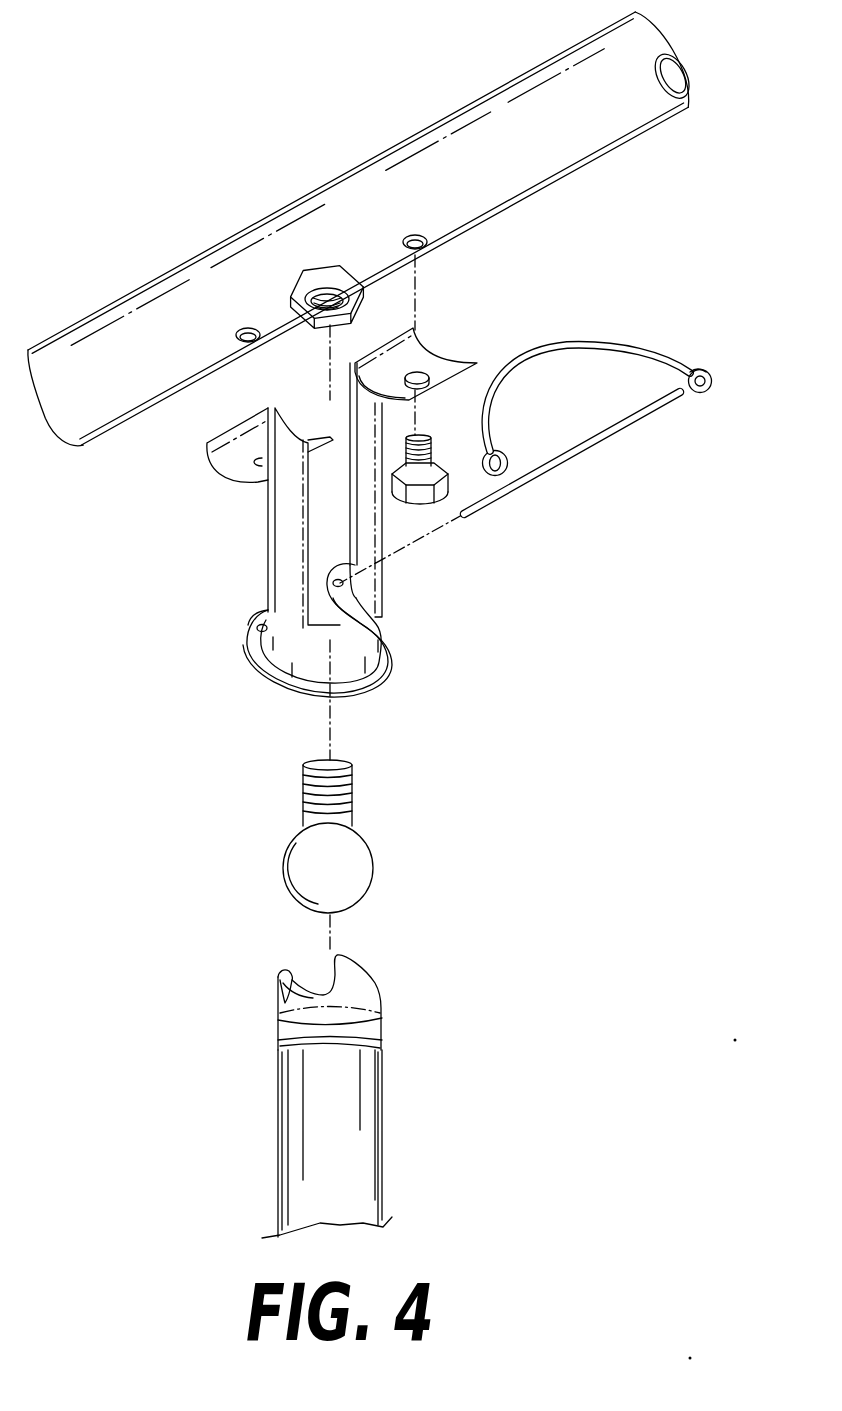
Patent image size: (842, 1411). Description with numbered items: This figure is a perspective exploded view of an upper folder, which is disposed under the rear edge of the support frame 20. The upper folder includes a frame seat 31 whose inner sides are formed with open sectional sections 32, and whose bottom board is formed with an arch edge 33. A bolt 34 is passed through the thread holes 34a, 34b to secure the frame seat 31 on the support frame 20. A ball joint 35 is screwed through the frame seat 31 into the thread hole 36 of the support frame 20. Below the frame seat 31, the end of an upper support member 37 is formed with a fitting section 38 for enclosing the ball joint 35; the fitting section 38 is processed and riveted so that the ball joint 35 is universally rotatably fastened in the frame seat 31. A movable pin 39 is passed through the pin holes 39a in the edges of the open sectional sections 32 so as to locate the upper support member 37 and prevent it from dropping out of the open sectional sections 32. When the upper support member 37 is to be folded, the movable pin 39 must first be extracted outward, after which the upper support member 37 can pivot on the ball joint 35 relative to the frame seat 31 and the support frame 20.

The support frame 20 is at (258, 258).
The frame seat 31 is at (392, 613).
The open sectional sections 32 is at (292, 517).
The arch edge 33 is at (435, 347).
The bolt 34 is at (422, 495).
The thread hole 34a is at (450, 375).
The thread hole 34b is at (426, 247).
The ball joint 35 is at (297, 850).
The thread hole 36 is at (353, 265).
The upper support member 37 is at (367, 1140).
The fitting section 38 is at (363, 960).
The movable pin 39 is at (613, 433).
The pin holes 39a is at (253, 610).